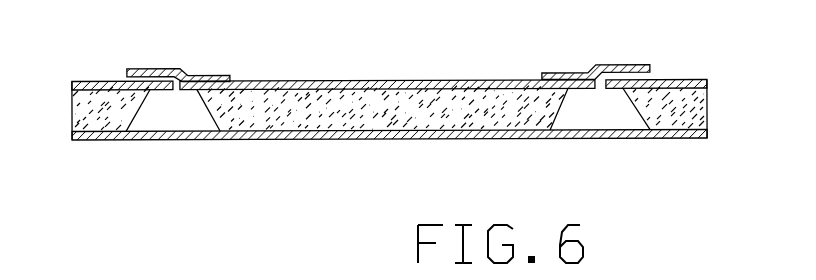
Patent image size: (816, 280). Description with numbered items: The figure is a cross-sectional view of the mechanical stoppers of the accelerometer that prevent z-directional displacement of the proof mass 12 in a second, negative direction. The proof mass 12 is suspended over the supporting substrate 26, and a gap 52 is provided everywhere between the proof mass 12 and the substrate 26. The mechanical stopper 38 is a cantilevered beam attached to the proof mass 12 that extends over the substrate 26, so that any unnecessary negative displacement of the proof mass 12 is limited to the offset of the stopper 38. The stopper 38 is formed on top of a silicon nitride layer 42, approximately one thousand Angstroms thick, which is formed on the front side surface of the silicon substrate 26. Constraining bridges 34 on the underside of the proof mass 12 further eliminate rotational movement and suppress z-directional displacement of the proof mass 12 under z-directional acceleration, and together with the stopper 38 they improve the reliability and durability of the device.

The proof mass 12 is at (388, 102).
The supporting substrate 26 is at (92, 105).
The constraining bridges 34 is at (147, 134).
The mechanical stopper 38 is at (173, 68).
The silicon nitride layer 42 is at (355, 81).
The gap 52 is at (175, 111).